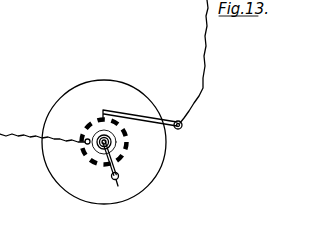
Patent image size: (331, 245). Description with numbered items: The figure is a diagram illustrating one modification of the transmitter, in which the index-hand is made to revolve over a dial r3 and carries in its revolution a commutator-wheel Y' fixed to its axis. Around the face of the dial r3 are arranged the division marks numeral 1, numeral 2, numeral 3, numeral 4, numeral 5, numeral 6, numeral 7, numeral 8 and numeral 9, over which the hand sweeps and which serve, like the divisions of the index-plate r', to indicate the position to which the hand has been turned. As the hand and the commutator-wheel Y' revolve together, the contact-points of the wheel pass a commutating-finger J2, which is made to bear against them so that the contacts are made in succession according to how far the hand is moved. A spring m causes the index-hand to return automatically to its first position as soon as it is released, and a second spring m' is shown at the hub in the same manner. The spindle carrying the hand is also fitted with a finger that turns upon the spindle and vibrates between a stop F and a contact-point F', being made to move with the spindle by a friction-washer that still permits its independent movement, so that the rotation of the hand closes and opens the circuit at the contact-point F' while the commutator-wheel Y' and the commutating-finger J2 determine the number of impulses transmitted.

The dial numeral 1 is at (103, 93).
The dial numeral 2 is at (135, 104).
The dial numeral 3 is at (152, 130).
The dial numeral 4 is at (146, 166).
The dial numeral 5 is at (119, 190).
The dial numeral 6 is at (87, 189).
The dial numeral 7 is at (59, 171).
The dial numeral 8 is at (52, 132).
The dial numeral 9 is at (71, 103).
The commutator-wheel Y' is at (99, 142).
The spring m is at (104, 132).
The escapement wheel tooth m' is at (125, 131).
The index-plate r' is at (117, 164).
The dial r3 is at (146, 152).
The stop F is at (42, 148).
The contact-point F' is at (76, 131).
The commutating-finger J2 is at (152, 118).